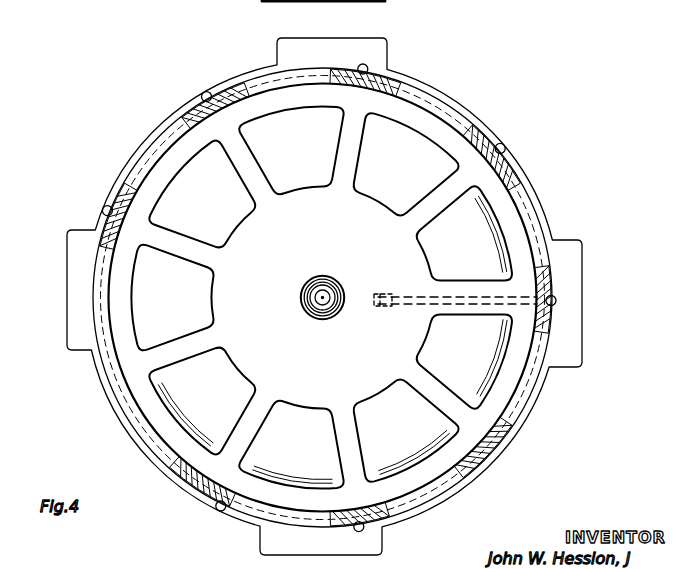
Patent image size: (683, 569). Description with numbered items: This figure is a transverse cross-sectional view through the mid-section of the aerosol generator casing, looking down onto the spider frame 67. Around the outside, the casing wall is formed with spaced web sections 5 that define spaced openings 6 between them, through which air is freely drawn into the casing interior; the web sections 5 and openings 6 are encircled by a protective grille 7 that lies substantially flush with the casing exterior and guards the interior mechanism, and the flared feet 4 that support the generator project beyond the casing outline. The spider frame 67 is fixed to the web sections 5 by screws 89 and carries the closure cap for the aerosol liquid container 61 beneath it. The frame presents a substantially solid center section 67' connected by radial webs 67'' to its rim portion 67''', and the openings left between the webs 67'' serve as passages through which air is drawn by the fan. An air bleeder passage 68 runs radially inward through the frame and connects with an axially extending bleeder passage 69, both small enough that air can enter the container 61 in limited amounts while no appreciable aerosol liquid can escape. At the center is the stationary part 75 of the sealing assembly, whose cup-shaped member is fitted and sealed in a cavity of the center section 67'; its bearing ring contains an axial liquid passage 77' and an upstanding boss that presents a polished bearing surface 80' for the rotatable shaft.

The flared feet 4 is at (278, 44).
The web sections 5 is at (497, 172).
The spaced openings 6 is at (523, 203).
The protective grille 7 is at (537, 210).
The container 61 is at (500, 378).
The spider frame 67 is at (330, 270).
The center section 67' is at (195, 278).
The webs 67'' is at (291, 297).
The rim portion 67''' is at (202, 194).
The air bleeder passage 68 is at (413, 296).
The axial extending bleeder passage 69 is at (393, 305).
The stationary part 75 is at (305, 289).
The axially extending liquid passage 77' is at (333, 278).
The polished bearing surface 80' is at (312, 315).
The screws 89 is at (503, 150).